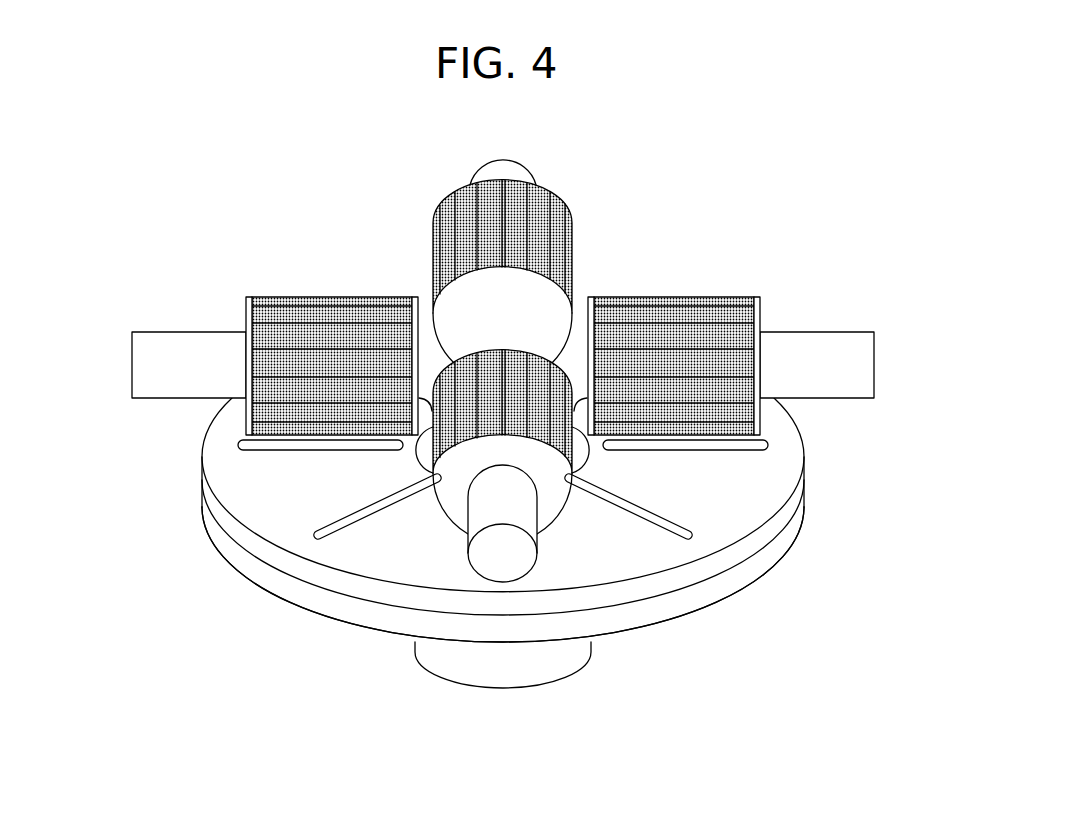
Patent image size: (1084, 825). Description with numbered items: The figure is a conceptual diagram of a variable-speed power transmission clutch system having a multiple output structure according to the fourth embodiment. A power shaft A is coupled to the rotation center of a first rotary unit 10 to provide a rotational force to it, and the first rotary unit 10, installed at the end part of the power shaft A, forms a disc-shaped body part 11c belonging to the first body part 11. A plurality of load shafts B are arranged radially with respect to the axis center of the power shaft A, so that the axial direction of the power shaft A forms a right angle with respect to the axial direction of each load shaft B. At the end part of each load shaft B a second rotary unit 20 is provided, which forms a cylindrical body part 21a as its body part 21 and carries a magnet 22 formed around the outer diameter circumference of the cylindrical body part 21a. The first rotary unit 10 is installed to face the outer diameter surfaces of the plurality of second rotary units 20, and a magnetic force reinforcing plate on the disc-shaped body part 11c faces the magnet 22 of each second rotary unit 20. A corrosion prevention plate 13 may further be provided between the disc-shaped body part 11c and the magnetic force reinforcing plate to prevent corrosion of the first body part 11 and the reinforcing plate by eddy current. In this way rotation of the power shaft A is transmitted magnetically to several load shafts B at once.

The first rotary unit 10 is at (552, 451).
The first body part 11 is at (510, 574).
The disc-shaped body part 11c is at (675, 602).
The corrosion prevention plate 13 is at (700, 498).
The second rotary unit 20 is at (458, 324).
The body part 21 is at (486, 324).
The cylindrical body part 21a is at (250, 297).
The magnet 22 is at (335, 317).
The power shaft A is at (505, 681).
The load shaft B is at (143, 370).